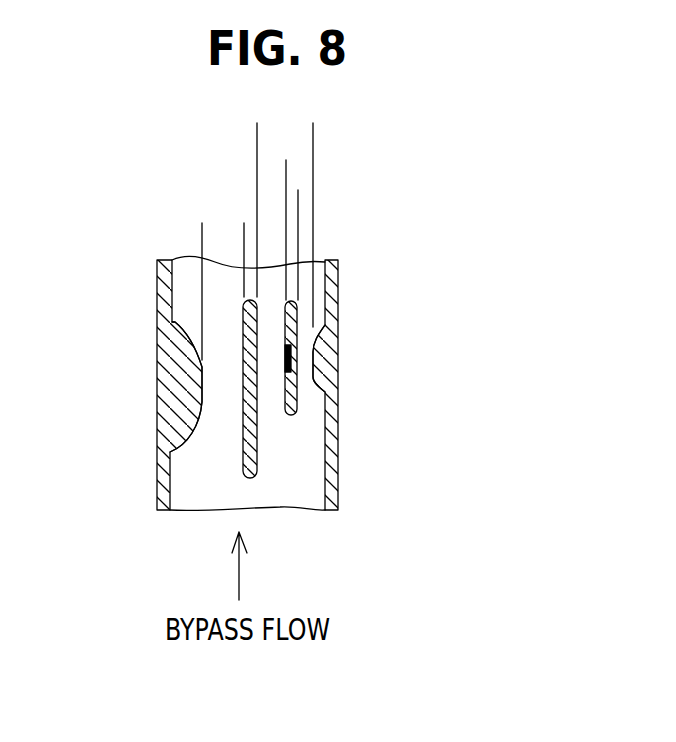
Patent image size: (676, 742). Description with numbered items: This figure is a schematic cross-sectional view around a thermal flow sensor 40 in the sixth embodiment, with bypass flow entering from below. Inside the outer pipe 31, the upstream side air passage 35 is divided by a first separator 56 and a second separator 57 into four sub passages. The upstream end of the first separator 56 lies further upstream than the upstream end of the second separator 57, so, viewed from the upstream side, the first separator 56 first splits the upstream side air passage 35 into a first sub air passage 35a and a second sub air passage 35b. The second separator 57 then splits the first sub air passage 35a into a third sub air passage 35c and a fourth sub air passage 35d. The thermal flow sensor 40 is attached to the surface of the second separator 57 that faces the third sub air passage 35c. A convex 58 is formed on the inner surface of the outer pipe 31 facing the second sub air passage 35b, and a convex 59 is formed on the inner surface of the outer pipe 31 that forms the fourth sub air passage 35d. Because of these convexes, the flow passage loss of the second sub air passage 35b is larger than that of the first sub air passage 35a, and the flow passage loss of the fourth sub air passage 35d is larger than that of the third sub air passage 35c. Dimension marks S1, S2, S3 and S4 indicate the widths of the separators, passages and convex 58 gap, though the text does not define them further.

The outer pipe 31 is at (332, 287).
The upstream side air passage 35 is at (298, 497).
The first sub air passage 35a is at (290, 460).
The second sub air passage 35b is at (203, 448).
The third sub air passage 35c is at (262, 388).
The fourth sub air passage 35d is at (305, 333).
The thermal flow sensor 40 is at (285, 356).
The first separator 56 is at (243, 458).
The second separator 57 is at (298, 417).
The convex 58 is at (178, 412).
The convex 59 is at (317, 362).
The dimension S1 is at (338, 132).
The dimension S2 is at (268, 233).
The dimension S3 is at (300, 178).
The dimension S4 is at (265, 197).